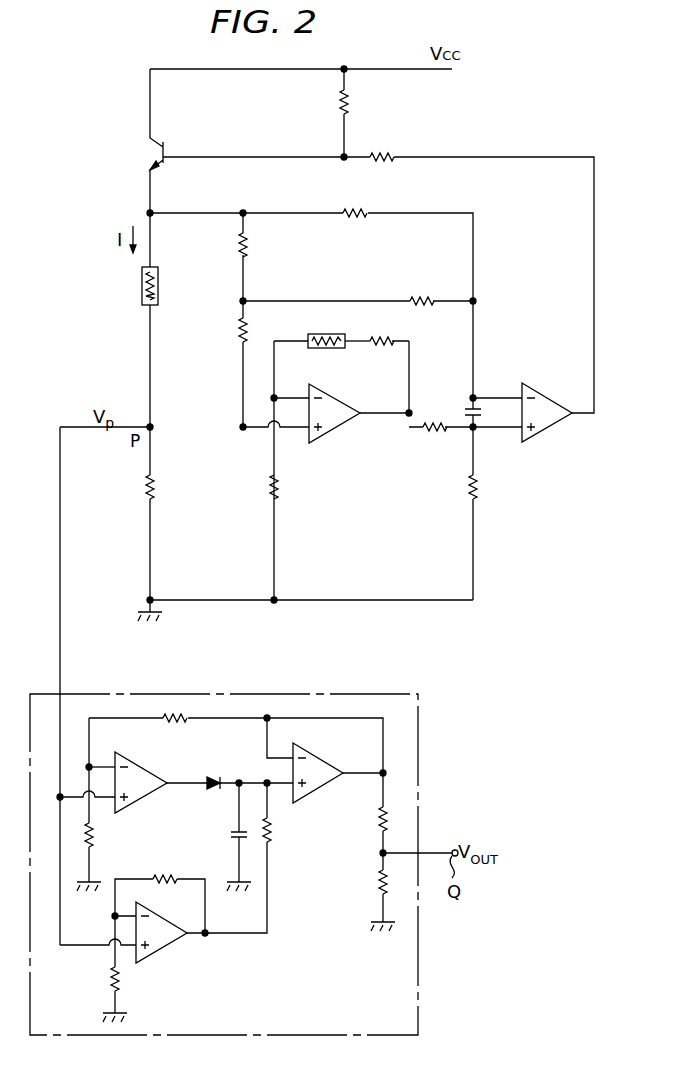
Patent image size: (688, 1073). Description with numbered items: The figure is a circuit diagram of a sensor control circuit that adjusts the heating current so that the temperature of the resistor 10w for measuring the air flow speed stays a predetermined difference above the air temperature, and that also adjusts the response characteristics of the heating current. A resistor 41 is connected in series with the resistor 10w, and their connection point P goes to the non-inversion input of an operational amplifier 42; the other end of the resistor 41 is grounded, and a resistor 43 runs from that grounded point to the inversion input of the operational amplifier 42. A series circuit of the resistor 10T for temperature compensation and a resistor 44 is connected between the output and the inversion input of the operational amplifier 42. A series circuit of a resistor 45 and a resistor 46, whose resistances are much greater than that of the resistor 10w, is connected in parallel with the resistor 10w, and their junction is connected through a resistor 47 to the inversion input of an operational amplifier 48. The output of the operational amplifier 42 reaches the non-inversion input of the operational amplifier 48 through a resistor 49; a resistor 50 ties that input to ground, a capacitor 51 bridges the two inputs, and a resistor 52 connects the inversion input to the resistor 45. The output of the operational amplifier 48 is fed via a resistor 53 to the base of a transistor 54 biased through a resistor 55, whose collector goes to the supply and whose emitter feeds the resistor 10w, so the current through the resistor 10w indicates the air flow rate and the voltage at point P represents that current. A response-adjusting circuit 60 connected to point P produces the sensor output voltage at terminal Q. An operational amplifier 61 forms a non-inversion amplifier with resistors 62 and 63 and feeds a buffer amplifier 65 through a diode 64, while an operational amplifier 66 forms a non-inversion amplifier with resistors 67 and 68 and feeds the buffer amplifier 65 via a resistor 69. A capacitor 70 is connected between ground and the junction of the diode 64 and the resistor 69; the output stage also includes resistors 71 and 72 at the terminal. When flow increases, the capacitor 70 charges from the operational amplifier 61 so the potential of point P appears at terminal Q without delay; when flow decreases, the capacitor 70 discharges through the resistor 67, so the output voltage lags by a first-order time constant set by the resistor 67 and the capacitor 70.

The transistor 54 is at (167, 141).
The resistor 55 is at (356, 113).
The resistor 53 is at (385, 143).
The resistor 52 is at (360, 199).
The resistor 45 is at (229, 257).
The resistor 46 is at (227, 364).
The resistor 47 is at (422, 287).
The resistor for measuring the air flow speed 10w is at (172, 320).
The resistor for temperature compensation 10T is at (309, 328).
The resistor 44 is at (389, 326).
The operational amplifier 42 is at (359, 424).
The resistor 49 is at (433, 441).
The capacitor 51 is at (463, 407).
The operational amplifier 48 is at (547, 424).
The resistor 50 is at (486, 513).
The resistor 41 is at (161, 513).
The resistor 43 is at (285, 488).
The response-adjusting circuit 60 is at (419, 762).
The operational amplifier 61 is at (141, 792).
The resistor 62 is at (175, 730).
The resistor 63 is at (97, 857).
The diode 64 is at (213, 768).
The capacitor 70 is at (227, 837).
The resistor 69 is at (280, 814).
The buffer amplifier 65 is at (318, 782).
The resistor 71 is at (372, 813).
The resistor 72 is at (376, 892).
The resistor 67 is at (165, 865).
The operational amplifier 66 is at (161, 942).
The resistor 68 is at (106, 969).